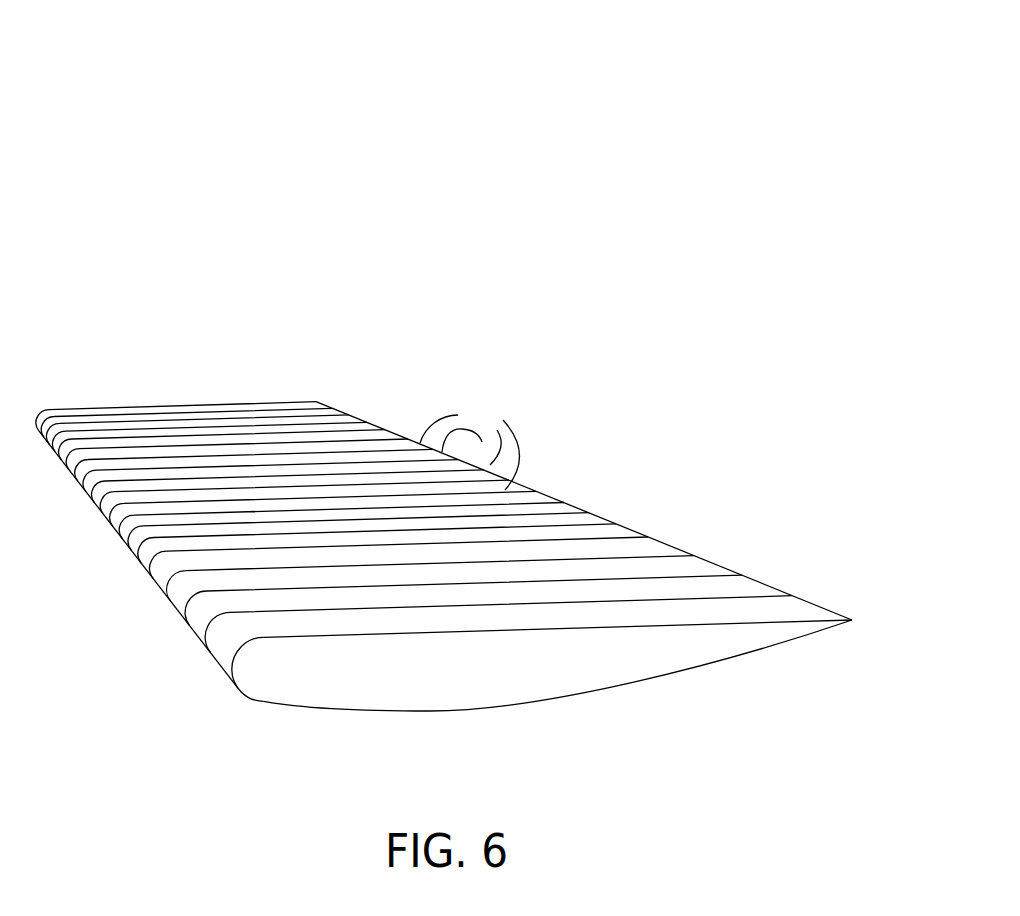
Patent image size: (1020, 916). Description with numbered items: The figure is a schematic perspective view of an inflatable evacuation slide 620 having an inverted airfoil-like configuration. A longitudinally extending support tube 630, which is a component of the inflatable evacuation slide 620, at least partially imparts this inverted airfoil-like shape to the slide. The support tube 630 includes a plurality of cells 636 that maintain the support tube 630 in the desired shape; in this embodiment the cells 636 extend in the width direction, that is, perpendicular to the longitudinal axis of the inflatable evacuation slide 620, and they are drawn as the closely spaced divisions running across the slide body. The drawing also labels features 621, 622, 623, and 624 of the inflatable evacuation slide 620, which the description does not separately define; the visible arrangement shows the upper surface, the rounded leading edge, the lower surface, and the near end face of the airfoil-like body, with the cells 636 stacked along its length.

The inflatable evacuation slide 620 is at (235, 91).
The airfoil body 621 is at (131, 386).
The end face 622 is at (395, 686).
The layers 623 is at (537, 630).
The lower surface 624 is at (492, 712).
The longitudinally extending support tube 630 is at (583, 658).
The plurality of cells 636 is at (470, 437).